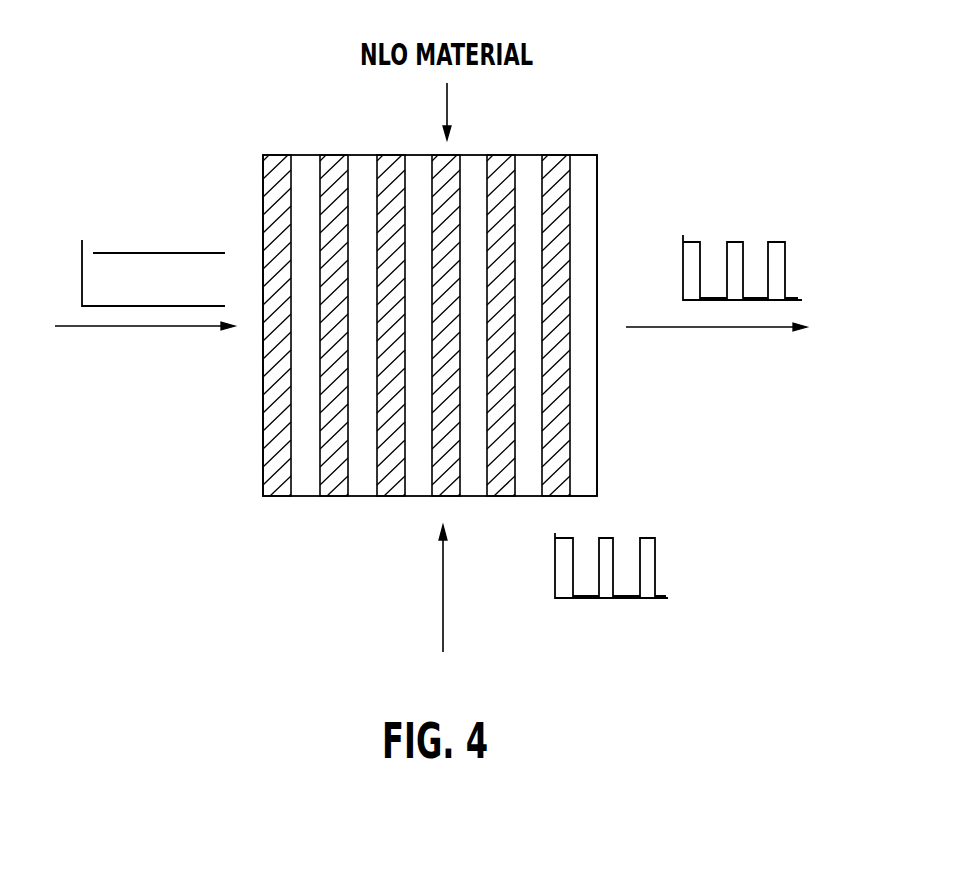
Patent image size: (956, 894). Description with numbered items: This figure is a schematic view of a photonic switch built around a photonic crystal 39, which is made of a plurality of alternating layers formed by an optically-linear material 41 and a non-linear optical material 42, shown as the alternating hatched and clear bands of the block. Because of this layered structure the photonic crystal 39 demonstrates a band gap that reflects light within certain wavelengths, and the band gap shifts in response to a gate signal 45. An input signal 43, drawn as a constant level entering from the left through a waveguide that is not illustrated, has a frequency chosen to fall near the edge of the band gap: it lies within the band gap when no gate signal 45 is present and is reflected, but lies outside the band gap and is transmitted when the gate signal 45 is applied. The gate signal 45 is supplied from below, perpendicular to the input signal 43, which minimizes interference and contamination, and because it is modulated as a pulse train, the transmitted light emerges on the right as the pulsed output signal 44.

The photonic crystal 39 is at (247, 537).
The optically-linear material 41 is at (598, 155).
The non-linear optical material 42 is at (328, 153).
The input signal 43 is at (133, 252).
The output signal 44 is at (785, 270).
The gate signal 45 is at (655, 550).